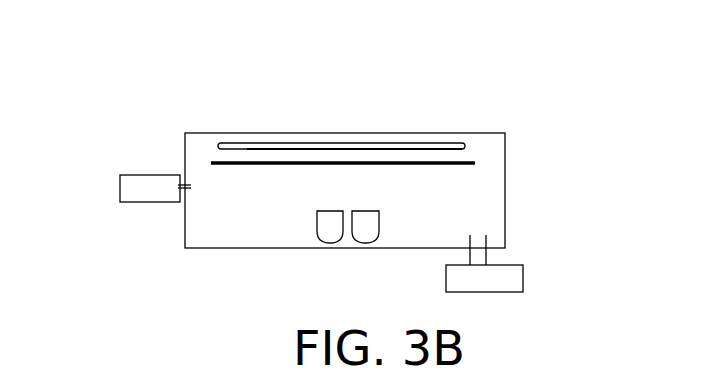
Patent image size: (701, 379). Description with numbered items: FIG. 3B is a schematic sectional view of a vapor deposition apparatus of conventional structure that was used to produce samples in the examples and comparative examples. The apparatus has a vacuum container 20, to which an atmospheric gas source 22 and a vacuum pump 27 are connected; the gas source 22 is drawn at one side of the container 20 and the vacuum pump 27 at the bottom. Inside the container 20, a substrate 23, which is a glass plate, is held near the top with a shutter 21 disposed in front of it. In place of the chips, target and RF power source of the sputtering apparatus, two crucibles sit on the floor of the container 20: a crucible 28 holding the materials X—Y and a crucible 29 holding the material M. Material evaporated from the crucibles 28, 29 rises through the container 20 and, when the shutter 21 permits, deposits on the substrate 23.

The vacuum container 20 is at (442, 132).
The shutter 21 is at (227, 161).
The atmospheric gas source 22 is at (120, 192).
The substrate 23 is at (433, 149).
The vacuum pump 27 is at (523, 278).
The crucible 28 is at (327, 230).
The crucible 29 is at (368, 230).